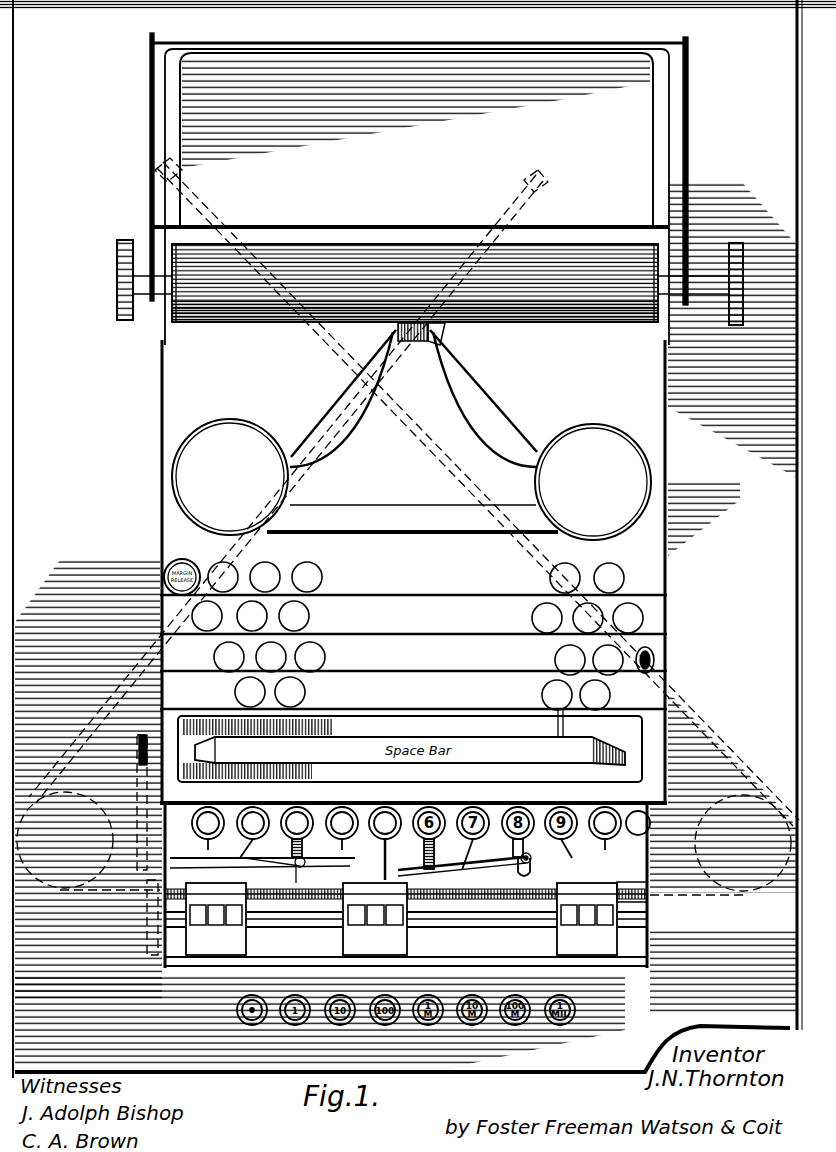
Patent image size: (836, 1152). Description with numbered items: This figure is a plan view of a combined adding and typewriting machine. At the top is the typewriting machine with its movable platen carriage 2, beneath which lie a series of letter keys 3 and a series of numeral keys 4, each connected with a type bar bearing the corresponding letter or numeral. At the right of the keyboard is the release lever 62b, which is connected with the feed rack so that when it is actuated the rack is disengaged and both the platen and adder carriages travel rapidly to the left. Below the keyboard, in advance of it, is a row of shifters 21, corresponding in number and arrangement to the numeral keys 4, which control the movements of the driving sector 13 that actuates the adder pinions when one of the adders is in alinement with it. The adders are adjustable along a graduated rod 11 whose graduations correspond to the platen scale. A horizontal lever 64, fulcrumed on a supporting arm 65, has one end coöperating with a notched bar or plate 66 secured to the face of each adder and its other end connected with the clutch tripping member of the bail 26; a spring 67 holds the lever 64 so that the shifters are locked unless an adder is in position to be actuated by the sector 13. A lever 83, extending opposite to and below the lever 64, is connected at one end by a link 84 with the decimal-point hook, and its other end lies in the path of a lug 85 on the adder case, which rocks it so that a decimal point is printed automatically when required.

The movable platen carriage 2 is at (148, 198).
The letter keys 3 is at (309, 616).
The numeral keys 4 is at (314, 566).
The release lever 62b is at (654, 661).
The bail 26 is at (148, 755).
The shifters 21 is at (216, 840).
The spring 67 is at (232, 845).
The horizontal lever 64 is at (294, 834).
The supporting arm 65 is at (335, 843).
The driving sector 13 is at (385, 843).
The link 84 is at (531, 857).
The notched bar or plate 66 is at (329, 880).
The lug 85 is at (405, 872).
The graduated rod 11 is at (630, 890).
The lever 83 is at (452, 866).